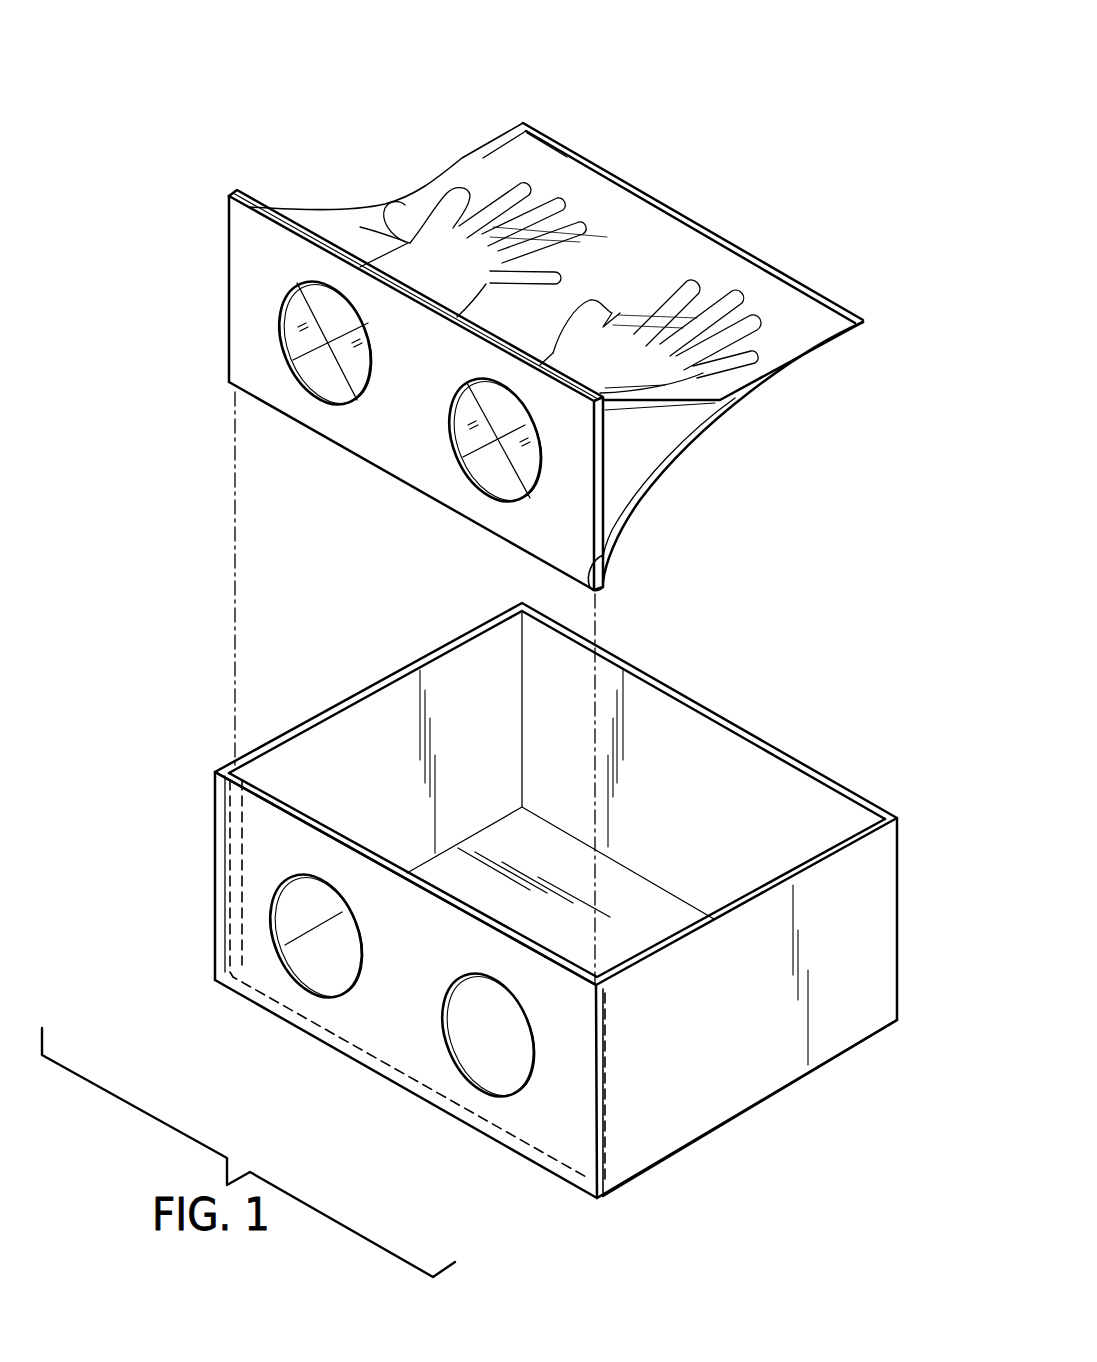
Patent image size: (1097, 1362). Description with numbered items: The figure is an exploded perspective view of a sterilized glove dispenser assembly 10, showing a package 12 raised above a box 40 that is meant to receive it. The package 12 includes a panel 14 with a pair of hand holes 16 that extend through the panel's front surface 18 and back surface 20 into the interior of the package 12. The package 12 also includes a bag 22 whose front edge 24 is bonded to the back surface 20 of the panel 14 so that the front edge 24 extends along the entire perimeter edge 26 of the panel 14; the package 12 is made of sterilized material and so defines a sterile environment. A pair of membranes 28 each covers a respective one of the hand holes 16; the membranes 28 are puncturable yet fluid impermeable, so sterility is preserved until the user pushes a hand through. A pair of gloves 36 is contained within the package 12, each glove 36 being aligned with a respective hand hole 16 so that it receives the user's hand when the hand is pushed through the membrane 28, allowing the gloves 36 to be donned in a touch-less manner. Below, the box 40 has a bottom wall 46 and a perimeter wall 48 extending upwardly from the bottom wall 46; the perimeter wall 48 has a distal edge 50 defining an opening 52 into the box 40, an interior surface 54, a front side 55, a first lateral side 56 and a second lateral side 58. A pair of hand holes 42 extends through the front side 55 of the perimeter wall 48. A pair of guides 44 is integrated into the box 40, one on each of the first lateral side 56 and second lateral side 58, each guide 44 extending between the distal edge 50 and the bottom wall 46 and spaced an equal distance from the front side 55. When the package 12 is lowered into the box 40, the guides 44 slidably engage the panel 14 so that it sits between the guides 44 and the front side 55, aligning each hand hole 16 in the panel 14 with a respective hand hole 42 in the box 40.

The sterilized glove dispenser assembly 10 is at (339, 507).
The package 12 is at (656, 292).
The panel 14 is at (366, 390).
The hand holes 16 is at (410, 424).
The front surface 18 is at (177, 289).
The back surface 20 is at (386, 164).
The bag 22 is at (606, 143).
The front edge 24 is at (646, 583).
The perimeter edge 26 is at (415, 243).
The membranes 28 is at (402, 447).
The gloves 36 is at (563, 232).
The box 40 is at (588, 900).
The hand holes 42 is at (402, 1039).
The guides 44 is at (488, 936).
The bottom wall 46 is at (633, 772).
The perimeter wall 48 is at (841, 1014).
The distal edge 50 is at (581, 794).
The opening 52 is at (630, 734).
The interior surface 54 is at (434, 728).
The front side 55 is at (409, 1089).
The first lateral side 56 is at (217, 811).
The second lateral side 58 is at (750, 1116).